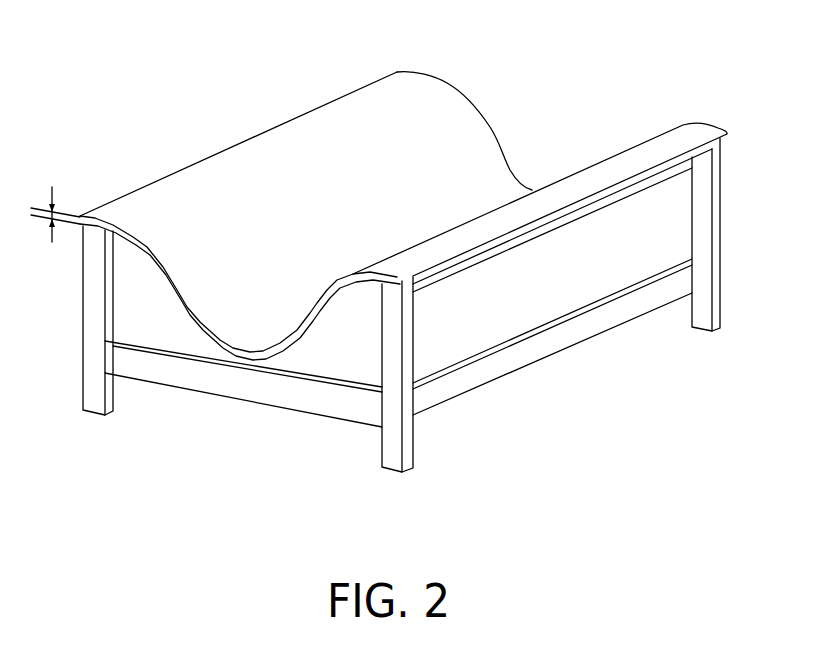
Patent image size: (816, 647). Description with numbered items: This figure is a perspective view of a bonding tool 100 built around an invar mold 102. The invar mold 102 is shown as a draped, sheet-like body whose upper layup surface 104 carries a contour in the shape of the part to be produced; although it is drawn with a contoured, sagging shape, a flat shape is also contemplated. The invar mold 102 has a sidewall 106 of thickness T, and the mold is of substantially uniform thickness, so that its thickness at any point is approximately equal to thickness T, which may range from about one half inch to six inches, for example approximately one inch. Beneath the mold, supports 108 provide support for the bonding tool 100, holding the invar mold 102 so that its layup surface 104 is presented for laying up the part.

The bonding tool 100 is at (160, 92).
The invar mold 102 is at (356, 105).
The layup surface 104 is at (522, 185).
The sidewall 106 is at (413, 278).
The supports 108 is at (693, 309).